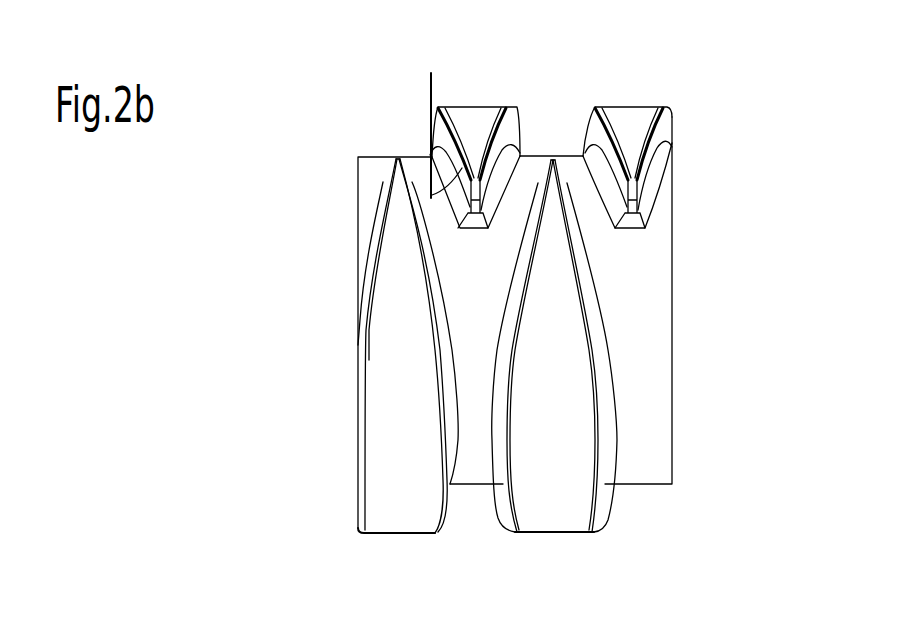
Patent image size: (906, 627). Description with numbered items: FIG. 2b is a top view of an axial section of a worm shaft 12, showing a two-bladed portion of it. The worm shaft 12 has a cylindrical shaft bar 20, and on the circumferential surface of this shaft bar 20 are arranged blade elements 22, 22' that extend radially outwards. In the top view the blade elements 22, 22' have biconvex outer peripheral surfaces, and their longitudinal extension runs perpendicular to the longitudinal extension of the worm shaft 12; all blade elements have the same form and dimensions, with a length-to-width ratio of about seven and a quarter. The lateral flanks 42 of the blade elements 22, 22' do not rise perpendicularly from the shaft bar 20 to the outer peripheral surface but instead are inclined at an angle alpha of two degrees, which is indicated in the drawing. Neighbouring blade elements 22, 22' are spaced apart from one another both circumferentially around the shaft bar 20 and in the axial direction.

The worm shaft 12 is at (200, 408).
The cylindrical shaft bar 20 is at (652, 302).
The blade element 22 is at (588, 360).
The blade element 22' is at (361, 346).
The lateral flanks 42 is at (565, 125).